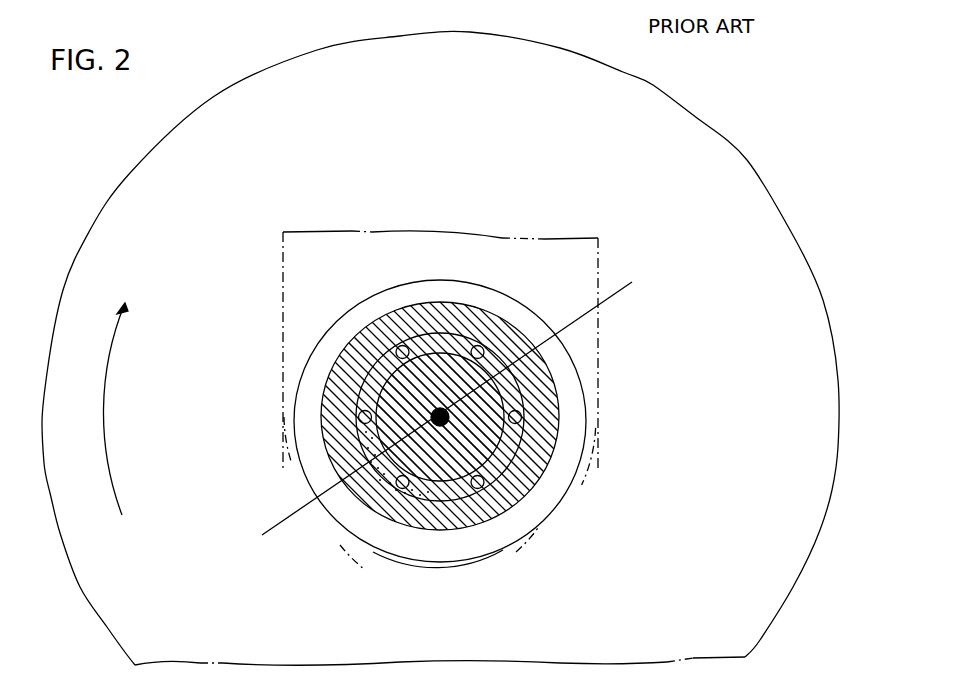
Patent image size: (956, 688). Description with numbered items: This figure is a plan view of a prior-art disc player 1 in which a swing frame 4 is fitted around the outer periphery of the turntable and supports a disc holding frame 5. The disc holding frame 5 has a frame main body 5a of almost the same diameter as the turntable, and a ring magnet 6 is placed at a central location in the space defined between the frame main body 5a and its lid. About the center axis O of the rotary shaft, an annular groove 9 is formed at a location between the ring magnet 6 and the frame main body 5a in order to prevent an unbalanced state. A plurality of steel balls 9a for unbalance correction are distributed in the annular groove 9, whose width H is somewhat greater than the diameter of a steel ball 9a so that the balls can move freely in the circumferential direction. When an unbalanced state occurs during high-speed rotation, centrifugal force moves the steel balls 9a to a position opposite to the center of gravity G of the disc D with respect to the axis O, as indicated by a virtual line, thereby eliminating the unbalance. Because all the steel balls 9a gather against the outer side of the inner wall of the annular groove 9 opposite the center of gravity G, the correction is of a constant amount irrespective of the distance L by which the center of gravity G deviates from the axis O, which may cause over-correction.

The disc player 1 is at (90, 166).
The swing frame 4 is at (332, 250).
The disc holding frame 5 is at (513, 292).
The frame main body 5a is at (412, 322).
The ring magnet 6 is at (447, 362).
The annular groove 9 is at (367, 380).
The steel balls 9a is at (335, 555).
The disc D is at (673, 133).
The center of gravity G is at (450, 399).
The width of the annular groove H is at (480, 353).
The distance of deviation L is at (510, 507).
The center axis O is at (441, 428).